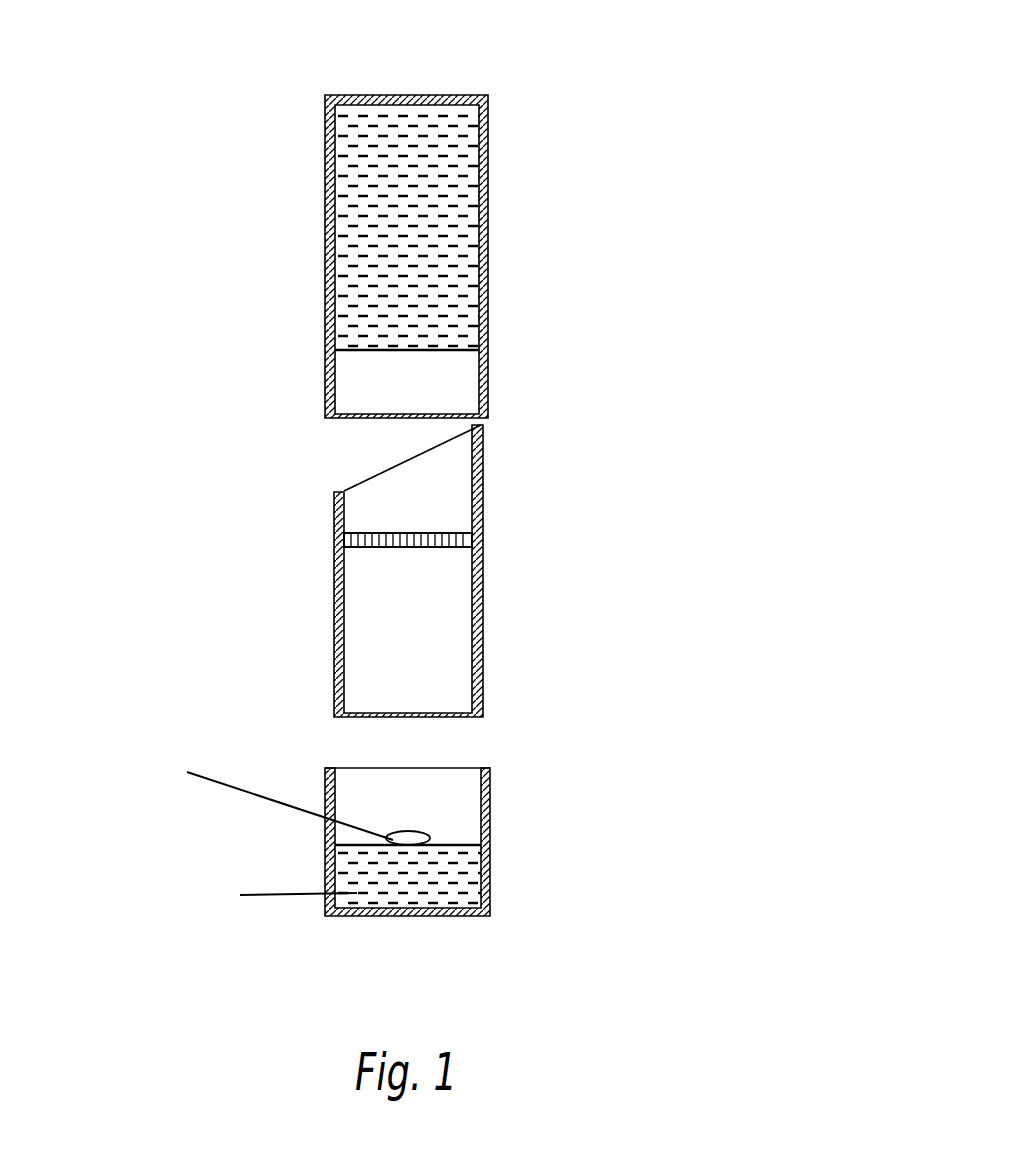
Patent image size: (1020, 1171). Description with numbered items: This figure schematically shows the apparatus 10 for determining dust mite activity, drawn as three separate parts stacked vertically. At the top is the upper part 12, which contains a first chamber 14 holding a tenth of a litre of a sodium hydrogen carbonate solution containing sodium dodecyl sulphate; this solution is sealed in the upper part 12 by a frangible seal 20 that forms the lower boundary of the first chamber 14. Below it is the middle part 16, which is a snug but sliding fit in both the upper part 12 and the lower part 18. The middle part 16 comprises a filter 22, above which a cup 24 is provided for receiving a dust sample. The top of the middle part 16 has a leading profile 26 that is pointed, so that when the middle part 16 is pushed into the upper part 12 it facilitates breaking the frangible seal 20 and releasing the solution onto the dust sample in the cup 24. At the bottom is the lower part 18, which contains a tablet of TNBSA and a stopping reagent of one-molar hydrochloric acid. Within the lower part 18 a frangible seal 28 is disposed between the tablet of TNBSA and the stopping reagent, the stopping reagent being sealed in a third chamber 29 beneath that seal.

The apparatus 10 is at (203, 271).
The upper part 12 is at (446, 256).
The first chamber 14 is at (450, 248).
The middle part 16 is at (572, 571).
The lower part 18 is at (300, 861).
The frangible seal 20 is at (448, 351).
The filter 22 is at (354, 543).
The cup 24 is at (440, 492).
The leading profile 26 is at (376, 470).
The frangible seal 28 is at (455, 846).
The third chamber 29 is at (417, 888).